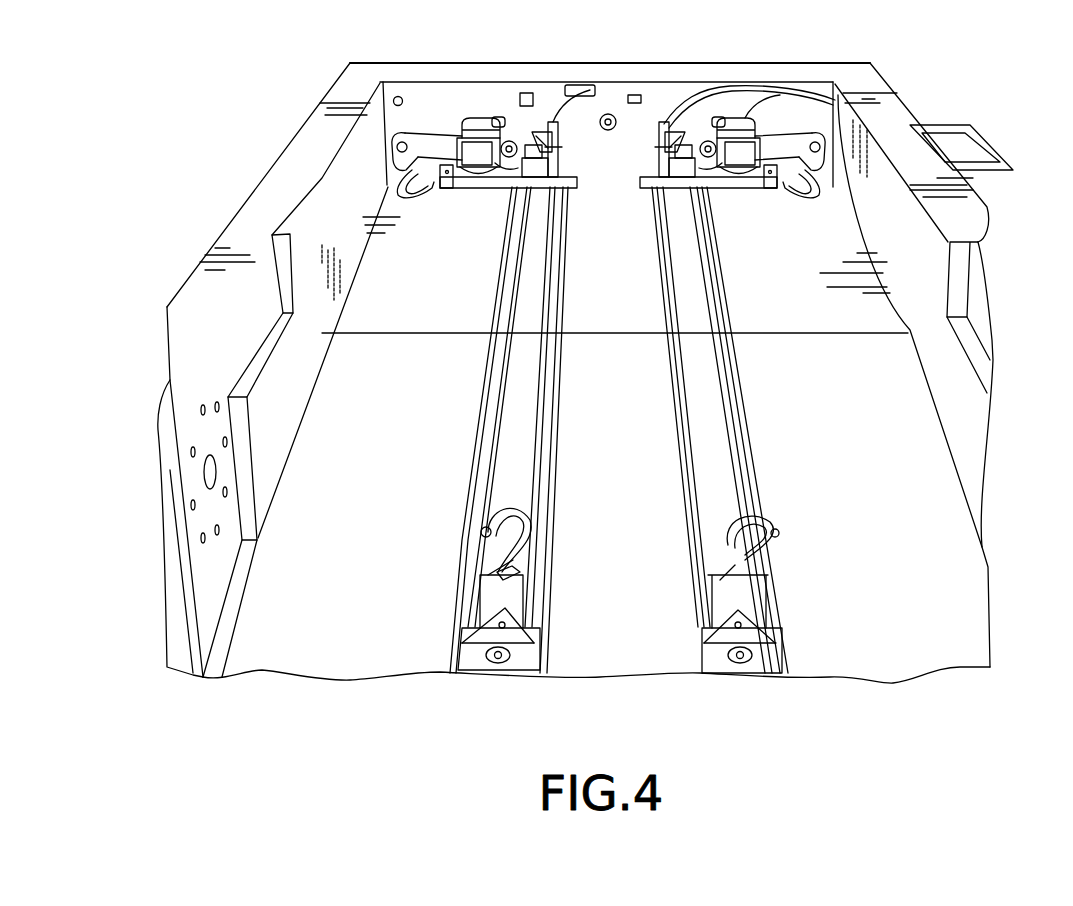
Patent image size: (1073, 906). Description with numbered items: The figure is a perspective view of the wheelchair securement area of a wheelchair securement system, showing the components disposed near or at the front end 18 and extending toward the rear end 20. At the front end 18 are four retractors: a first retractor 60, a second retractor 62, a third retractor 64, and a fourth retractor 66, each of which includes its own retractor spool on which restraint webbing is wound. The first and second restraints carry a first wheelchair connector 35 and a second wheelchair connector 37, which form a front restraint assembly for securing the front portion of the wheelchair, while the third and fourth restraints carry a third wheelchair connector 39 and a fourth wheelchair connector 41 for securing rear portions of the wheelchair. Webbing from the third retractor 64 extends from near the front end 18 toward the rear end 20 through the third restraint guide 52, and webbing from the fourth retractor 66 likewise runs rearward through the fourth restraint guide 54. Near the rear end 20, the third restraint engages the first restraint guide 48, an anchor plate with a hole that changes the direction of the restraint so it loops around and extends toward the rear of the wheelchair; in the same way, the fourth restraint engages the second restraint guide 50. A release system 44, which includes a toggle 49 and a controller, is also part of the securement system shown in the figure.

The front end 18 is at (362, 171).
The rear end 20 is at (306, 646).
The first wheelchair connector 35 is at (398, 192).
The second wheelchair connector 37 is at (804, 190).
The third wheelchair connector 39 is at (500, 510).
The fourth wheelchair connector 41 is at (778, 528).
The release system 44 is at (1000, 142).
The first restraint guide 48 is at (494, 662).
The toggle 49 is at (960, 147).
The second restraint guide 50 is at (743, 662).
The third restraint guide 52 is at (513, 320).
The fourth restraint guide 54 is at (707, 314).
The first retractor 60 is at (471, 126).
The second retractor 62 is at (748, 126).
The third retractor 64 is at (536, 122).
The fourth retractor 66 is at (697, 135).